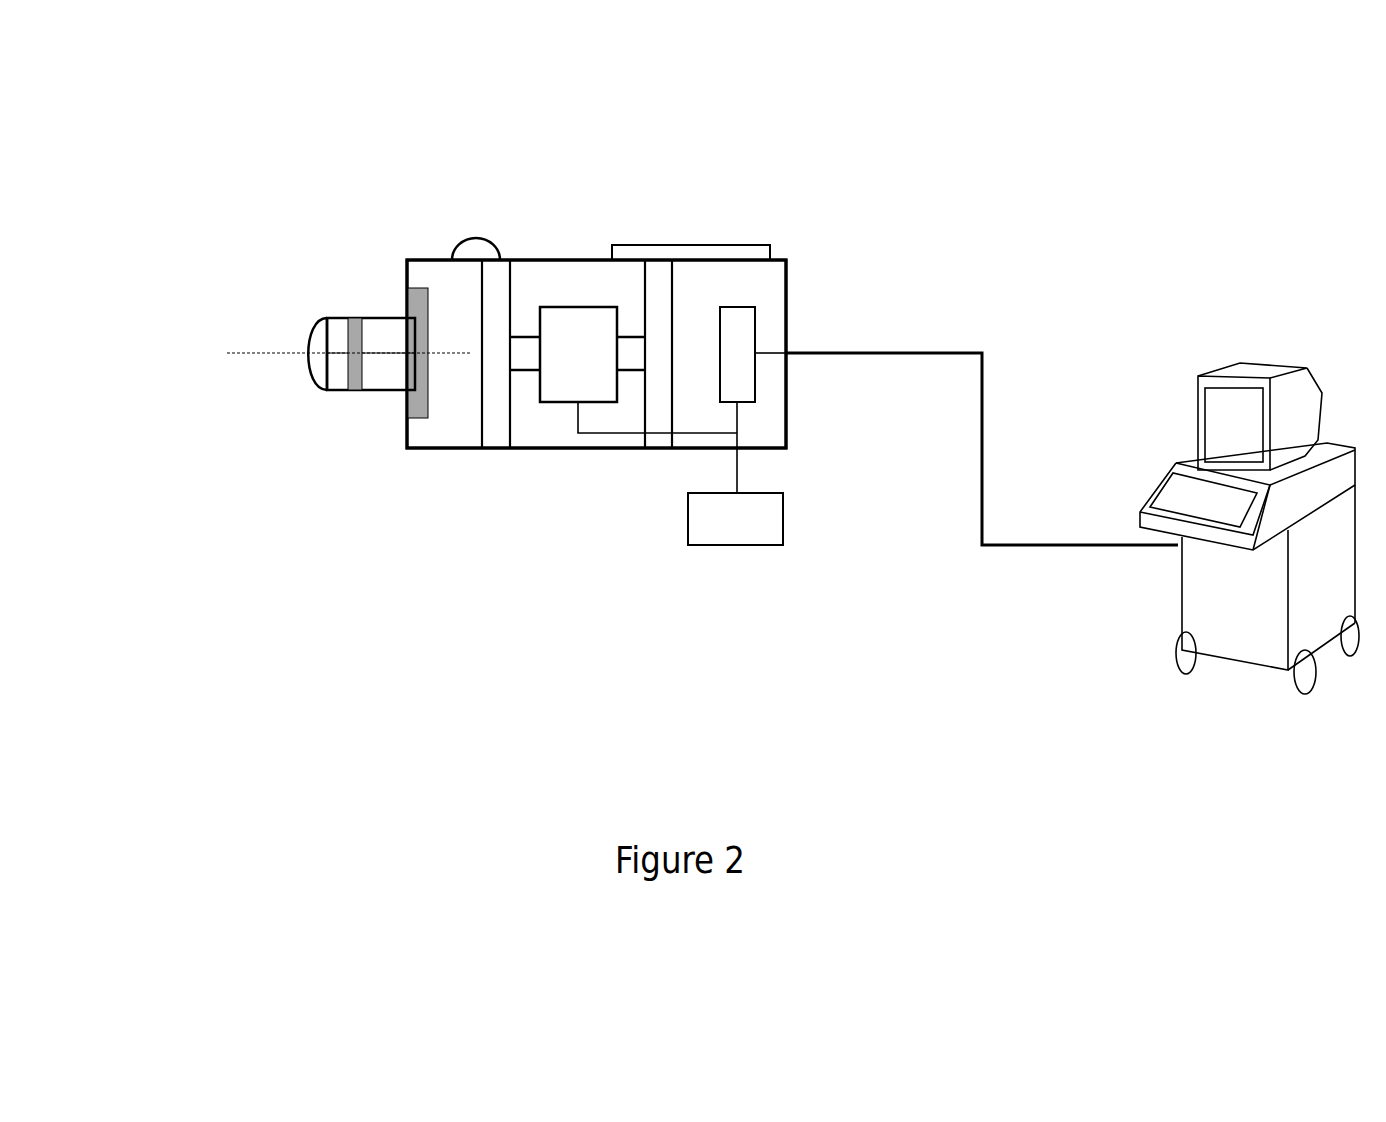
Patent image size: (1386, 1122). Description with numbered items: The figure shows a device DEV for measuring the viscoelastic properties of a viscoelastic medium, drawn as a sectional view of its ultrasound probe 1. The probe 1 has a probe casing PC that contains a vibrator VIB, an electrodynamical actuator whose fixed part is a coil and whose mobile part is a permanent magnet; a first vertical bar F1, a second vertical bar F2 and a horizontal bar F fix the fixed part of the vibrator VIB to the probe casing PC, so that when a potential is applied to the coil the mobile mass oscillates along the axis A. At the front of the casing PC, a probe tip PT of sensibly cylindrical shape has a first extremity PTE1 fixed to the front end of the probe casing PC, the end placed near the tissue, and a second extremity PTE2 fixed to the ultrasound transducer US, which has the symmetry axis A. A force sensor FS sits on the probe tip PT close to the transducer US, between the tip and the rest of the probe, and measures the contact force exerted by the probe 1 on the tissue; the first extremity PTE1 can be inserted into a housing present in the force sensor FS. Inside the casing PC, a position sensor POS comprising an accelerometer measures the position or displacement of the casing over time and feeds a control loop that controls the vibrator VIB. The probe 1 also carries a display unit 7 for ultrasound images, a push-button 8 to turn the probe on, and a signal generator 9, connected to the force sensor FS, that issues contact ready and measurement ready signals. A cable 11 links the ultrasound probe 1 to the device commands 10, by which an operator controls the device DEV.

The ultrasound probe 1 is at (368, 256).
The push-button 8 is at (478, 236).
The first extremity of the probe tip PTE1 is at (423, 351).
The horizontal bar F is at (534, 334).
The vibrator VIB is at (578, 304).
The display unit 7 is at (691, 242).
The position sensor POS is at (738, 301).
The cable 11 is at (999, 358).
The probe tip PT is at (347, 301).
The symmetry axis A is at (247, 344).
The ultrasound transducer US is at (306, 354).
The second extremity of the probe tip PTE2 is at (333, 394).
The force sensor FS is at (355, 394).
The first vertical bar F1 is at (497, 427).
The probe casing PC is at (540, 453).
The second vertical bar F2 is at (658, 407).
The signal generator 9 is at (737, 548).
The device commands 10 is at (1155, 574).
The device DEV is at (272, 672).